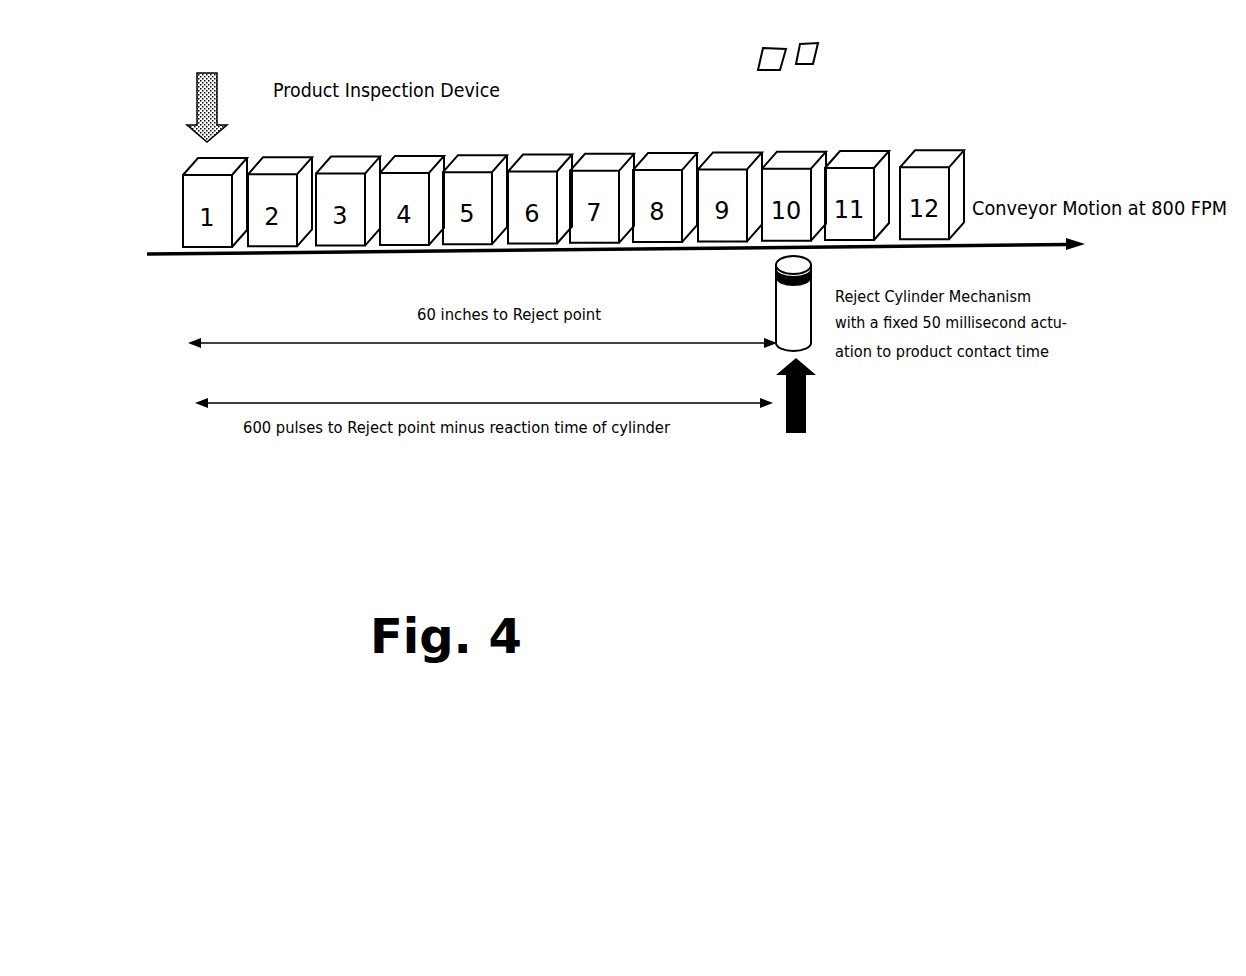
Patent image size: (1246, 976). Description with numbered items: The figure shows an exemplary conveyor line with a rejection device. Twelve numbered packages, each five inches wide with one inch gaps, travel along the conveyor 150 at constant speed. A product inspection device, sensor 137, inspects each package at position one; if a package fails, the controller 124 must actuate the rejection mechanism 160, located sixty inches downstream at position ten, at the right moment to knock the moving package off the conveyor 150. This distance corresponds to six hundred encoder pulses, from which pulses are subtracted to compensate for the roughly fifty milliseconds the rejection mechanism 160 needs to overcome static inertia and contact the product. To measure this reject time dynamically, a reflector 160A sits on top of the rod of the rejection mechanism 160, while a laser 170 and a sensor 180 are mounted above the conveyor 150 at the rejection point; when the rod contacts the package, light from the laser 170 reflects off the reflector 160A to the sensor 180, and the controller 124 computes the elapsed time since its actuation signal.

The sensor 137 is at (204, 91).
The conveyor 150 is at (599, 249).
The rejection mechanism 160 is at (798, 303).
The reflector 160A is at (813, 274).
The laser 170 is at (817, 42).
The sensor 180 is at (758, 50).
The controller 124 is at (902, 403).